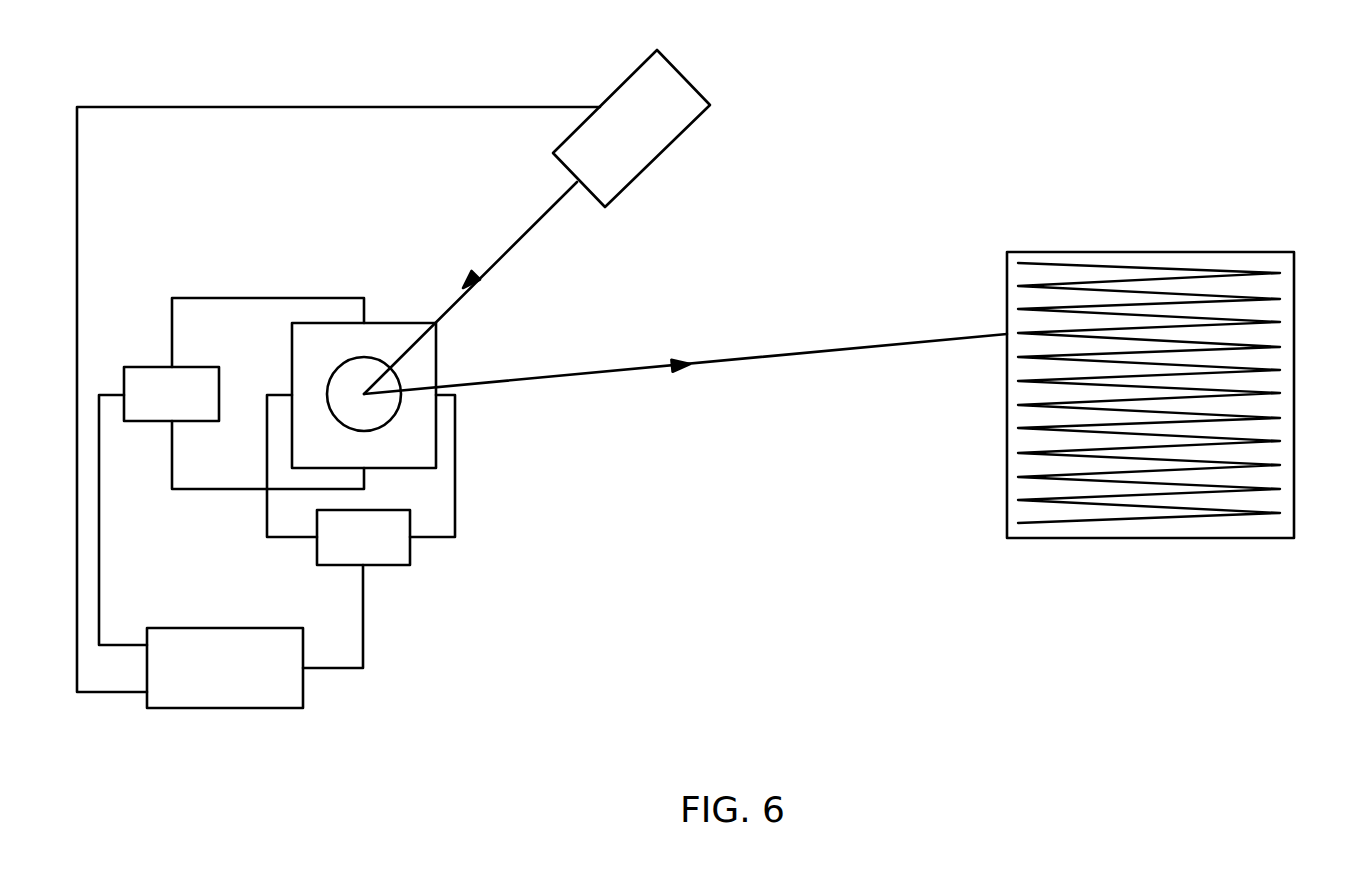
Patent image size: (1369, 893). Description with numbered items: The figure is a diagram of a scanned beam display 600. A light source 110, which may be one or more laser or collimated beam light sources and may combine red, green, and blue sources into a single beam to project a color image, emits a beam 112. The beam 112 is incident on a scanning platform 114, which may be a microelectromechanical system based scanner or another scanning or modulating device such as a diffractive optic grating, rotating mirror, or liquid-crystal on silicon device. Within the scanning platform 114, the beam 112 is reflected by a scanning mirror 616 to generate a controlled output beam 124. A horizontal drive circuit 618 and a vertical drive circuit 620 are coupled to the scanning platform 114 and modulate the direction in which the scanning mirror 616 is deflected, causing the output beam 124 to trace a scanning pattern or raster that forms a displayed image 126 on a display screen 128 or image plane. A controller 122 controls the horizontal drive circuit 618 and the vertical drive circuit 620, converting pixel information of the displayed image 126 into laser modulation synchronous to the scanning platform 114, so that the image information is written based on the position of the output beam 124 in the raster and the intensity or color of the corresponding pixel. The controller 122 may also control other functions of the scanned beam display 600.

The light source 110 is at (687, 80).
The beam 112 is at (520, 237).
The scanning platform 114 is at (398, 318).
The scanning mirror 616 is at (385, 425).
The horizontal drive circuit 618 is at (162, 367).
The vertical drive circuit 620 is at (410, 547).
The controller 122 is at (303, 692).
The output beam 124 is at (618, 375).
The displayed image 126 is at (1197, 267).
The display screen 128 is at (1297, 273).
The scanned beam display 600 is at (1193, 87).